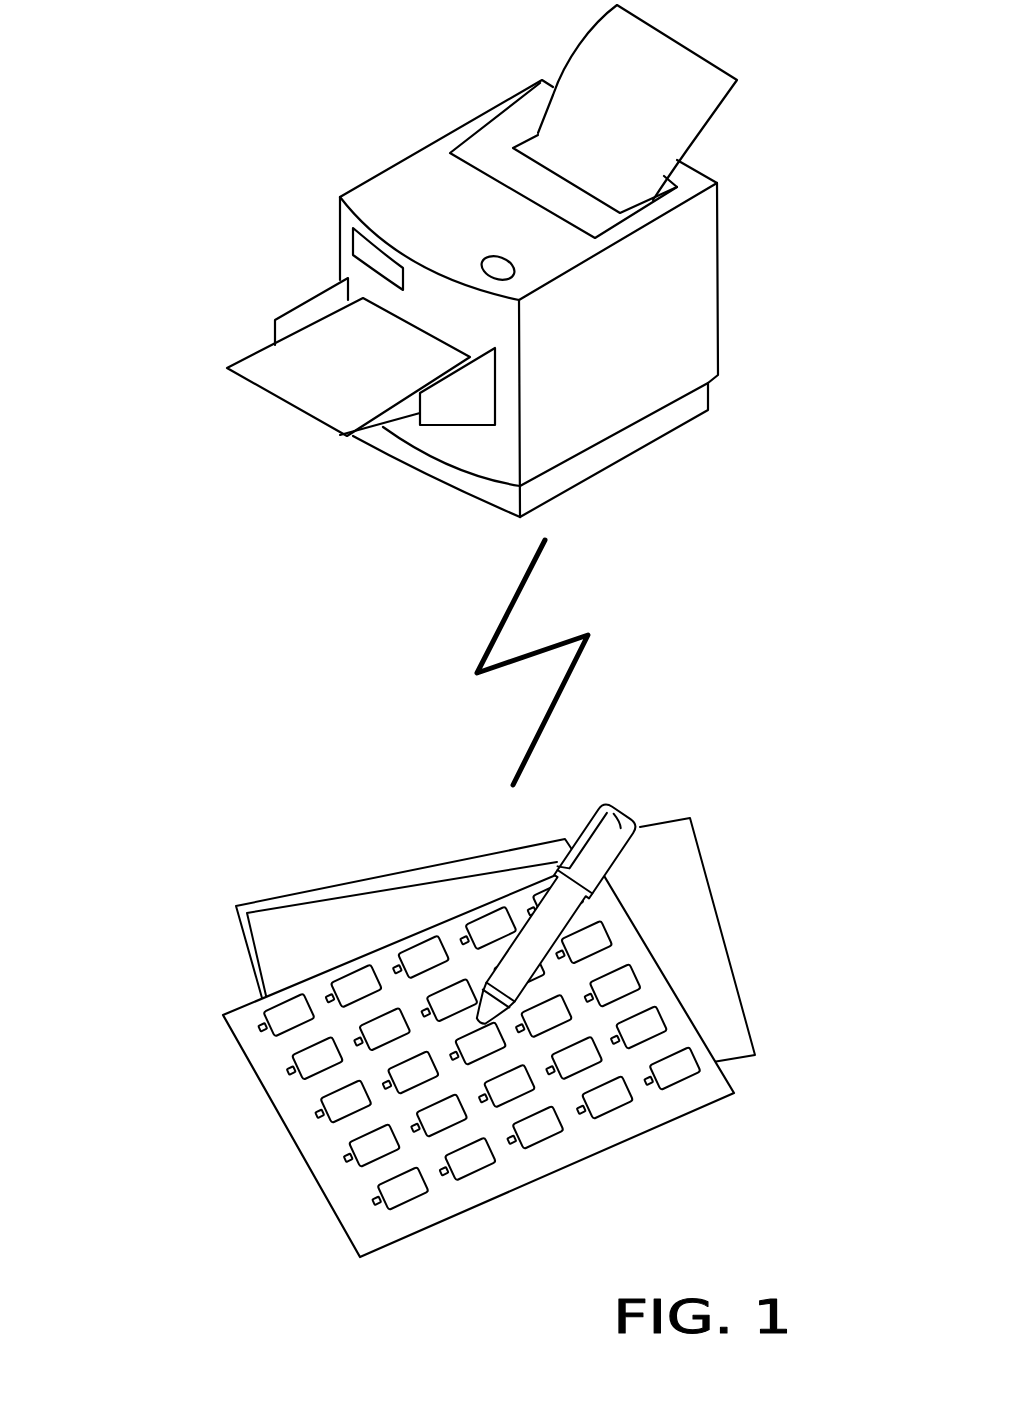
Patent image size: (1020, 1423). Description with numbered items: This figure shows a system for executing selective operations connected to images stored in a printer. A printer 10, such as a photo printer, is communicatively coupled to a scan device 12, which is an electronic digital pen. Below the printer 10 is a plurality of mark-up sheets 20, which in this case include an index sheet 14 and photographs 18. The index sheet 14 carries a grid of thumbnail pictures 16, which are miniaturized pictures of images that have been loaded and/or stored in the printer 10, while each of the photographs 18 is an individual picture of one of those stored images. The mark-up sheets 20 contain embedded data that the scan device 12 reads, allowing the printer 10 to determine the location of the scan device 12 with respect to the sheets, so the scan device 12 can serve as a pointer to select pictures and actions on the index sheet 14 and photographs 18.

The printer 10 is at (447, 170).
The scan device 12 is at (617, 827).
The index sheet 14 is at (225, 1046).
The thumbnail pictures 16 is at (145, 858).
The photographs 18 is at (398, 888).
The mark-up sheets 20 is at (407, 1037).